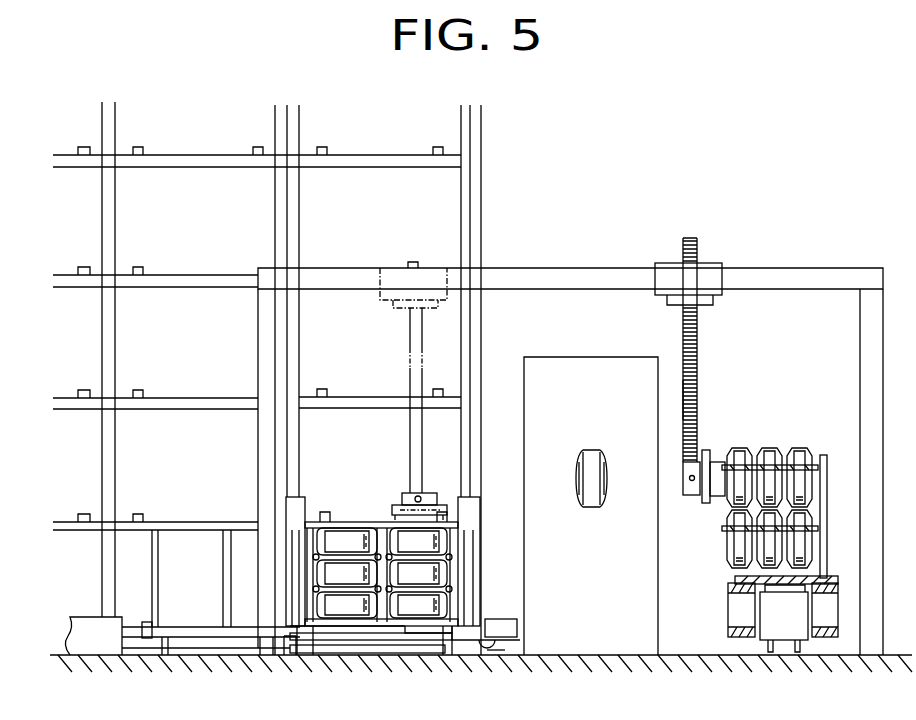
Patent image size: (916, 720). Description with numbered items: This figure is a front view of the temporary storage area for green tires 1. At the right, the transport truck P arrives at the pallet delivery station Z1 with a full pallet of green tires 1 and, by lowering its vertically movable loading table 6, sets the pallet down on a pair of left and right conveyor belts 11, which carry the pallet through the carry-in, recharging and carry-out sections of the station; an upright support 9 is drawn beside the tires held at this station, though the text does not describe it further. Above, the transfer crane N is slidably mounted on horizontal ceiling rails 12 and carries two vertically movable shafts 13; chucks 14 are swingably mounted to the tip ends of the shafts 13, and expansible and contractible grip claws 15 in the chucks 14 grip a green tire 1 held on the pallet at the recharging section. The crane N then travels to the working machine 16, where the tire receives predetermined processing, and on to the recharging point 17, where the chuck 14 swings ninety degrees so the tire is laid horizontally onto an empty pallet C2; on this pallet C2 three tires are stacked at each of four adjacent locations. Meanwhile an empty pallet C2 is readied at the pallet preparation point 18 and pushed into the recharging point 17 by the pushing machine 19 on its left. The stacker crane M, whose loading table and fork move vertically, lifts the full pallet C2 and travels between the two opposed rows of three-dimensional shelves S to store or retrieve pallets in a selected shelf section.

The three-dimensional shelves S is at (481, 190).
The ceiling rails 12 is at (740, 268).
The vertical shafts 13 is at (700, 340).
The transfer crane N is at (700, 384).
The chucks 14 is at (690, 495).
The grip claws 15 is at (712, 455).
The support post 9 is at (828, 497).
The green tire 1 is at (396, 527).
The working machine 16 is at (585, 357).
The pallet delivery station Z1 is at (693, 599).
The loading table 6 is at (822, 606).
The conveyor belts 11 is at (728, 637).
The transport truck P is at (760, 638).
The pushing machine 19 is at (80, 614).
The pallet preparation point 18 is at (232, 660).
The pallet C2 is at (352, 632).
The recharging point 17 is at (385, 658).
The stacker crane M is at (507, 643).